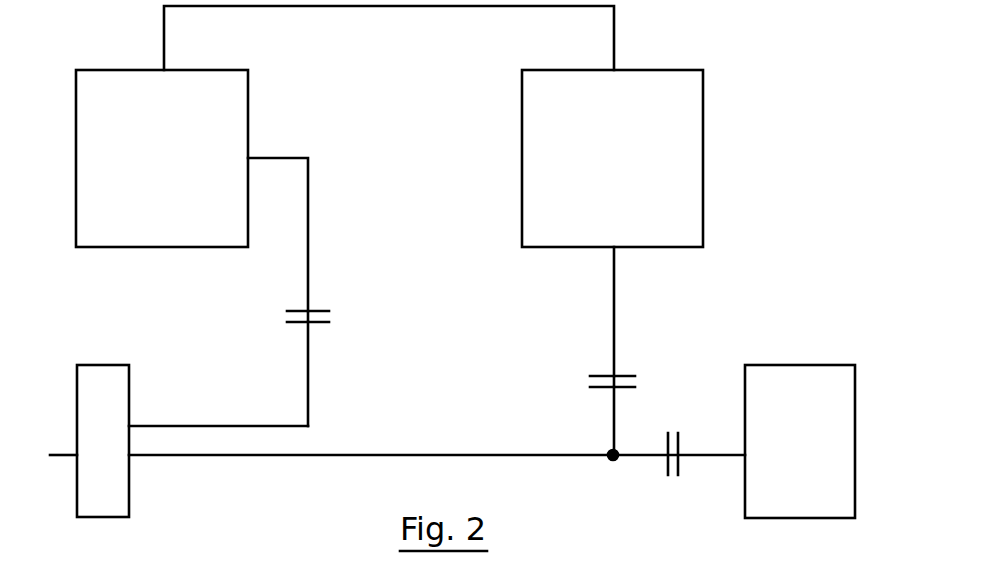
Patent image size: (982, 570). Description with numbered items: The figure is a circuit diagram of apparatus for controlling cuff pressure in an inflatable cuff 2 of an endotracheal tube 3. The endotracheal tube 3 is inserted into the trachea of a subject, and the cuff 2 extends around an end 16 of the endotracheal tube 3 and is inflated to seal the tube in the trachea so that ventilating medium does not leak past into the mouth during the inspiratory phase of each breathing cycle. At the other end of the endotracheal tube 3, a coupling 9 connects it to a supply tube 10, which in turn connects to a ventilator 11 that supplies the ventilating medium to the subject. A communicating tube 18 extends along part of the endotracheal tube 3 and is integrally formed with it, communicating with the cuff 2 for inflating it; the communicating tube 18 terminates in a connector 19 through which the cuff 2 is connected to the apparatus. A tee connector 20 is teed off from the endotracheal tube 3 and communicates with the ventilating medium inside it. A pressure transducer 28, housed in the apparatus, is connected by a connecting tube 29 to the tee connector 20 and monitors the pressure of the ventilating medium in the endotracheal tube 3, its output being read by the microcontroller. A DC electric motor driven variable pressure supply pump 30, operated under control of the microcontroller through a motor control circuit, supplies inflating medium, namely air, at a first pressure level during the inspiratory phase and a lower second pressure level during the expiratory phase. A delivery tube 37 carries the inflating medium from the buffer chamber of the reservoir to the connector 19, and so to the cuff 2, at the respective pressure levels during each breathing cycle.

The inflatable cuff 2 is at (107, 518).
The endotracheal tube 3 is at (282, 456).
The coupling 9 is at (680, 442).
The supply tube 10 is at (642, 458).
The ventilator 11 is at (825, 365).
The end of the endotracheal tube 16 is at (65, 452).
The communicating tube 18 is at (190, 425).
The connector 19 is at (317, 323).
The tee connector 20 is at (598, 376).
The pressure transducer 28 is at (703, 153).
The connecting tube 29 is at (614, 339).
The variable pressure supply pump 30 is at (248, 103).
The delivery tube 37 is at (308, 228).